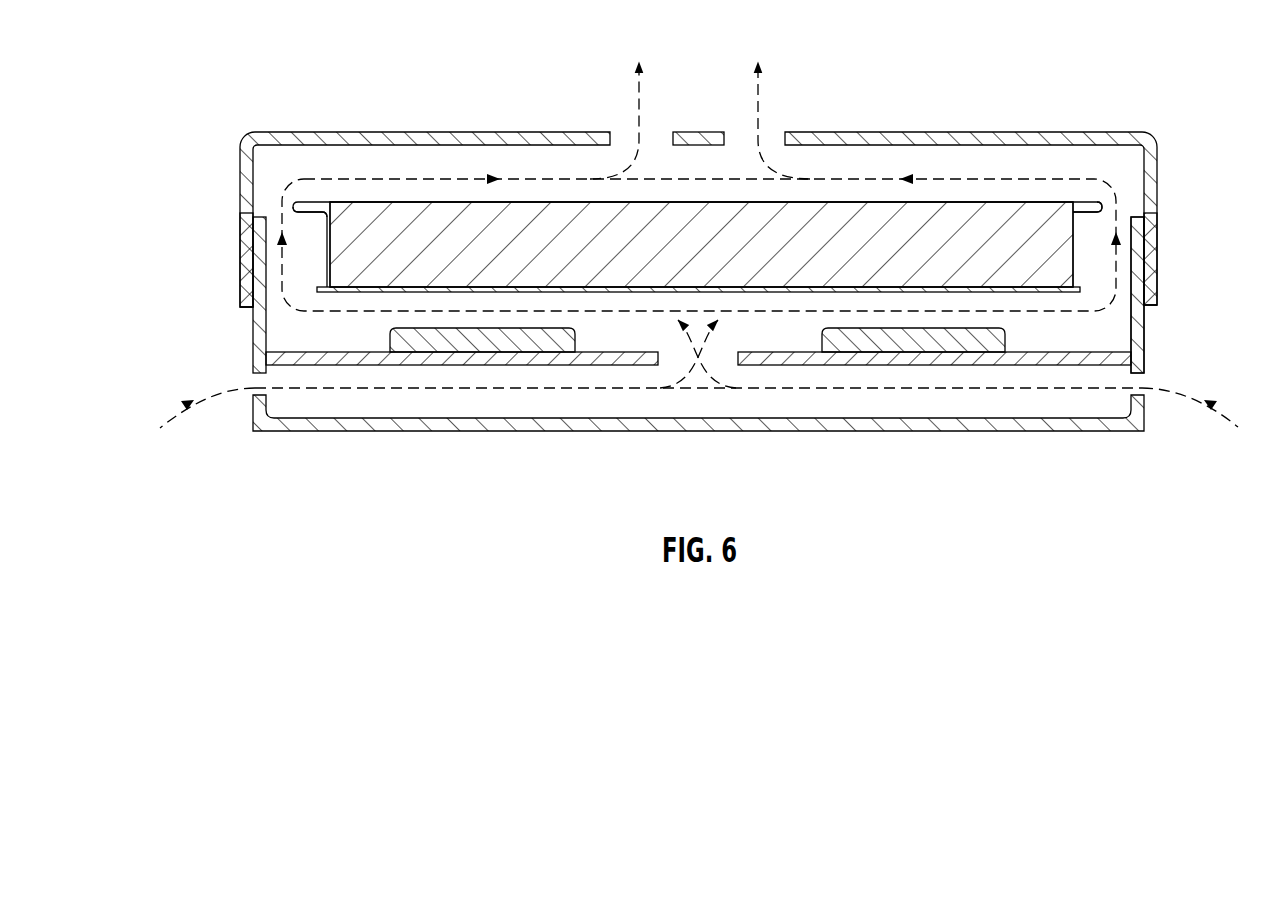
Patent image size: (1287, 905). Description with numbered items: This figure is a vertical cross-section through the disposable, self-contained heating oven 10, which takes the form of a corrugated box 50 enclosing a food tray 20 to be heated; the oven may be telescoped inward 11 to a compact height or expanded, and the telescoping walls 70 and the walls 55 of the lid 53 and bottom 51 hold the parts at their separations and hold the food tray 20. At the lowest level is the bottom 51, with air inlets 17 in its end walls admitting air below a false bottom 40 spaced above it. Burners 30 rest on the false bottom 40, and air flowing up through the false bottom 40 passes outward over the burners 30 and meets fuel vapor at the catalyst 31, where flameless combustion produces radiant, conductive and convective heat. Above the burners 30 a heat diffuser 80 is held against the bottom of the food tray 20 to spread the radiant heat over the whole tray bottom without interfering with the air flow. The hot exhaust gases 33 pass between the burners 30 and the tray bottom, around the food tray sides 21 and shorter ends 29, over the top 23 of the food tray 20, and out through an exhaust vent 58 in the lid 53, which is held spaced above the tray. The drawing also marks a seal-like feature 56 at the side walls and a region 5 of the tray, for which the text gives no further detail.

The heating oven 10 is at (1112, 58).
The corrugated box 50 is at (1162, 192).
The lid 53 is at (557, 142).
The exhaust vent 58 is at (772, 129).
The side wall of cover 56 is at (248, 212).
The hot exhaust gases 33 is at (245, 297).
The telescoped inward 11 is at (1162, 284).
The food tray 20 is at (750, 254).
The battery body 5 is at (450, 232).
The top of the food tray 23 is at (410, 205).
The food tray sides 21 is at (321, 230).
The shorter ends of the food tray 29 is at (1075, 220).
The heat diffuser 80 is at (333, 285).
The telescoping walls 70 is at (250, 253).
The false bottom 40 is at (320, 365).
The air inlets 17 is at (1139, 380).
The walls 55 is at (1145, 360).
The burner 30 is at (1022, 344).
The catalyst 31 is at (862, 345).
The bottom 51 is at (935, 432).